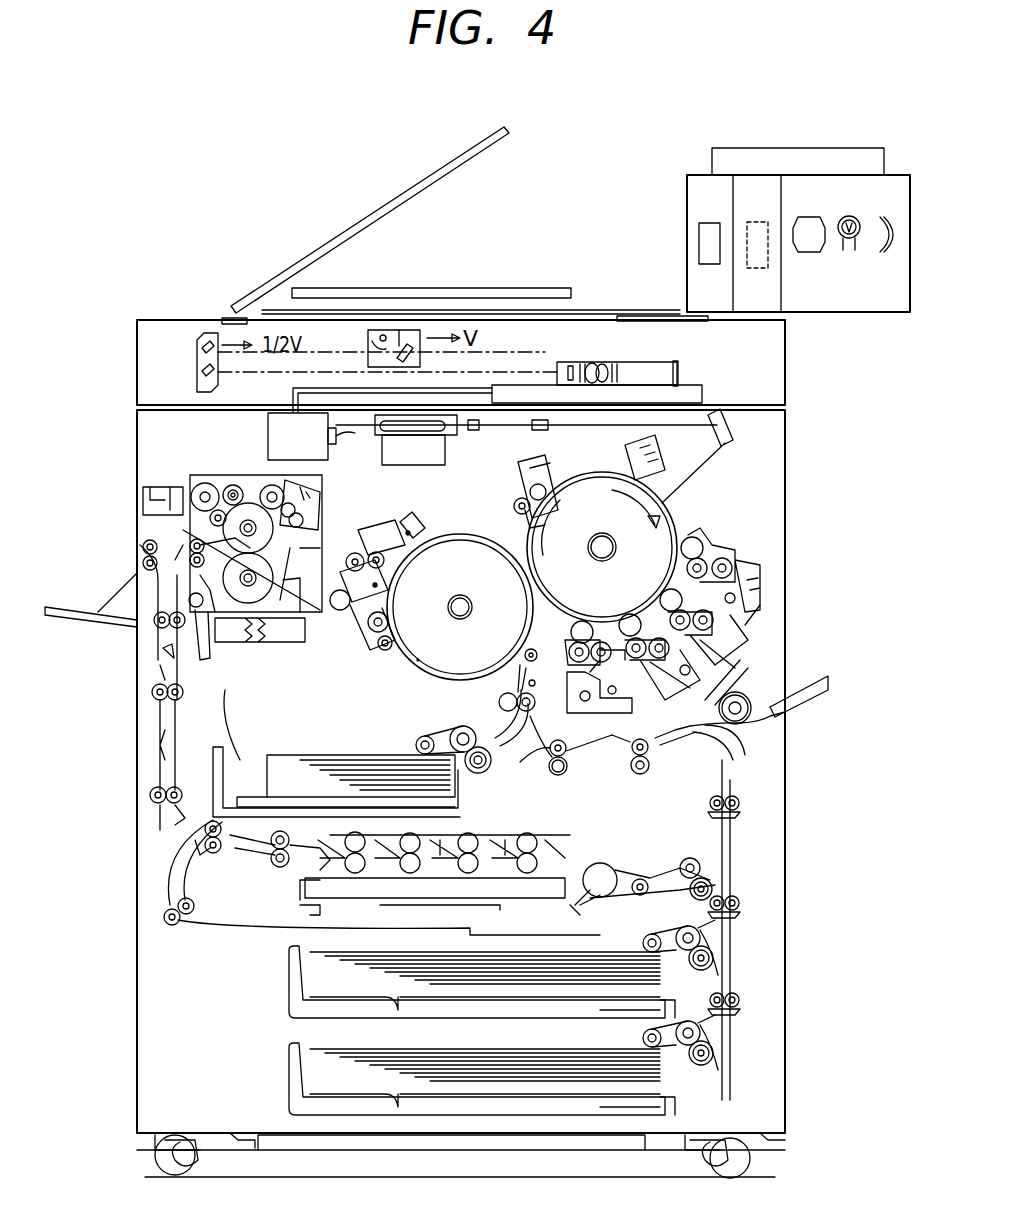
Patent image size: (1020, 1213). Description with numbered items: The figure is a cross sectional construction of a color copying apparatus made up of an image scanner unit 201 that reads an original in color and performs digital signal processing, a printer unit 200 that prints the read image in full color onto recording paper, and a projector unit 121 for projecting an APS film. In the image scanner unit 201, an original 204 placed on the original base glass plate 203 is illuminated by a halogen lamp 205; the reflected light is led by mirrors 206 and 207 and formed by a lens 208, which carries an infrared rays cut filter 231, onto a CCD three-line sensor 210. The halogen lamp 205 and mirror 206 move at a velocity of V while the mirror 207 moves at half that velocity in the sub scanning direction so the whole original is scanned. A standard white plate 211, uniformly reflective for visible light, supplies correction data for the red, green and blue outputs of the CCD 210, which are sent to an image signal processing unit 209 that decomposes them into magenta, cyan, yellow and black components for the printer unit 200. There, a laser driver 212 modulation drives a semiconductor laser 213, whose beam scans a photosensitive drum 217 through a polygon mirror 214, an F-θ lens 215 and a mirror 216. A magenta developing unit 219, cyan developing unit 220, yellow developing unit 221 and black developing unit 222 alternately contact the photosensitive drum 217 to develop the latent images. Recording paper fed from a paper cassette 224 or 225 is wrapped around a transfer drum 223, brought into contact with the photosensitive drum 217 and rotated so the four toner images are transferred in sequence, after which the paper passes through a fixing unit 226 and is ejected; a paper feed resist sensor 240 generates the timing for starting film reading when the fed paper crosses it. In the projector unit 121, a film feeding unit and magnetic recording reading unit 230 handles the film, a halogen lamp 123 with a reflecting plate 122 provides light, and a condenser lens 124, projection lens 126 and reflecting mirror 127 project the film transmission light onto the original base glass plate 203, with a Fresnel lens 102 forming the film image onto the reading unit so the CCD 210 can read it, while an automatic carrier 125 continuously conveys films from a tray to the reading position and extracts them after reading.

The Fresnel lens 102 is at (545, 288).
The projector unit 121 is at (687, 200).
The reflecting plate 122 is at (888, 217).
The halogen lamp 123 is at (850, 216).
The condenser lens 124 is at (812, 217).
The automatic carrier 125 is at (712, 160).
The projection lens 126 is at (699, 243).
The reflecting mirror 127 is at (442, 167).
The printer unit 200 is at (786, 525).
The image scanner unit 201 is at (786, 372).
The original base glass plate 203 is at (646, 316).
The original 204 is at (603, 310).
The halogen lamp 205 is at (383, 330).
The mirror 206 is at (413, 352).
The mirror 207 is at (196, 374).
The lens 208 is at (605, 366).
The image signal processing unit 209 is at (705, 397).
The CCD 3-line sensor 210 is at (680, 372).
The standard white plate 211 is at (228, 317).
The laser driver 212 is at (268, 435).
The semiconductor laser 213 is at (336, 436).
The polygon mirror 214 is at (420, 432).
The F-θ lens 215 is at (540, 431).
The mirror 216 is at (728, 444).
The photosensitive drum 217 is at (685, 516).
The magenta developing unit 219 is at (628, 623).
The cyan developing unit 220 is at (668, 592).
The yellow developing unit 221 is at (668, 538).
The black developing unit 222 is at (532, 634).
The transfer drum 223 is at (410, 665).
The paper cassette 224 is at (450, 786).
The paper cassette 225 is at (700, 1090).
The fixing unit 226 is at (262, 642).
The film feeding unit and magnetic recording reading unit 230 is at (762, 222).
The infrared rays cut filter 231 is at (563, 368).
The paper feed resist sensor 240 is at (535, 683).